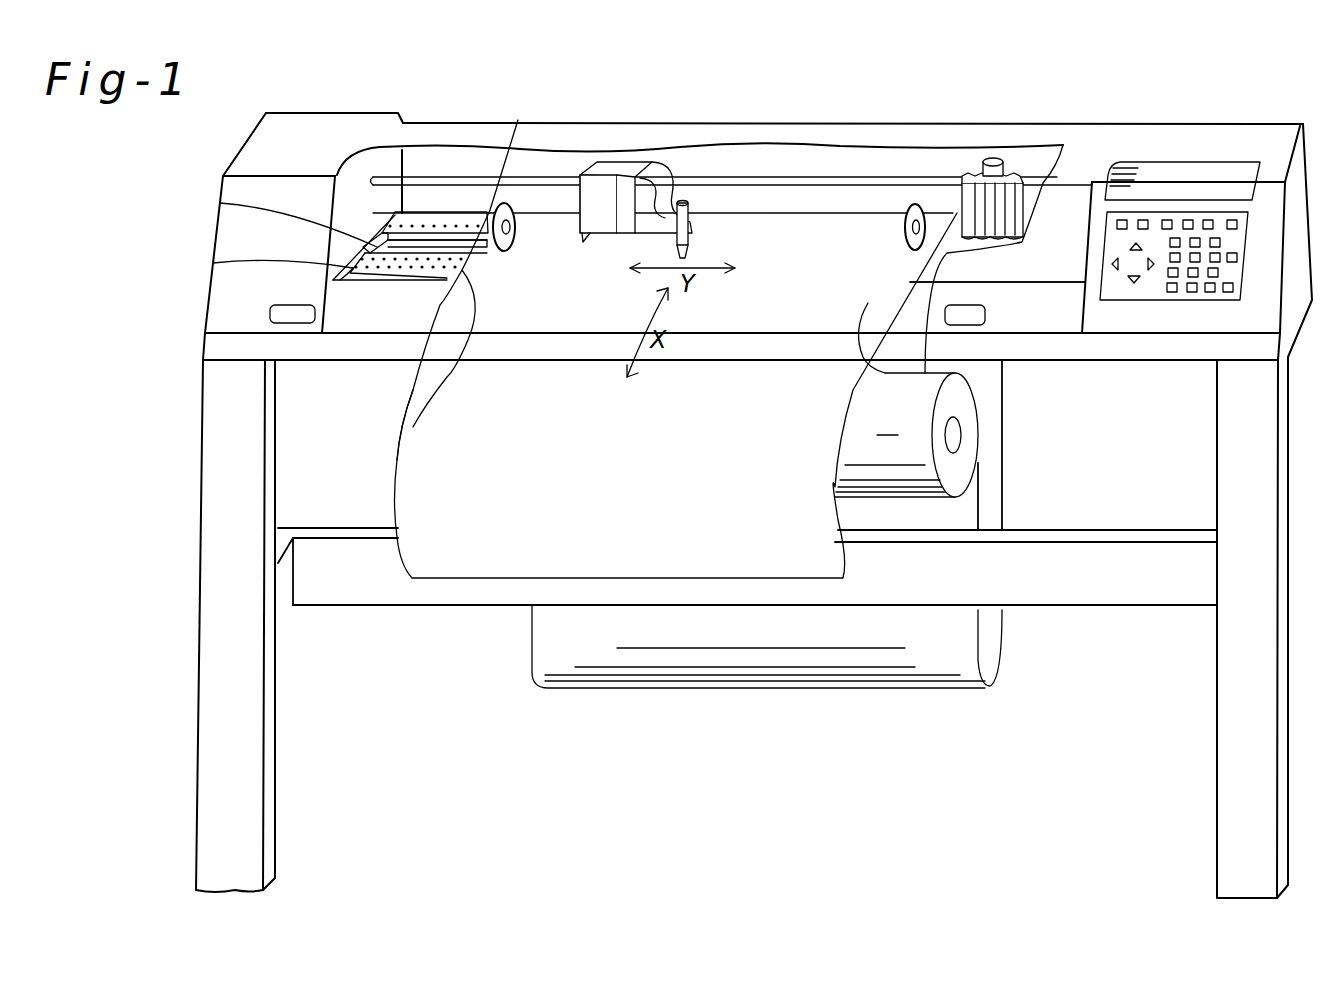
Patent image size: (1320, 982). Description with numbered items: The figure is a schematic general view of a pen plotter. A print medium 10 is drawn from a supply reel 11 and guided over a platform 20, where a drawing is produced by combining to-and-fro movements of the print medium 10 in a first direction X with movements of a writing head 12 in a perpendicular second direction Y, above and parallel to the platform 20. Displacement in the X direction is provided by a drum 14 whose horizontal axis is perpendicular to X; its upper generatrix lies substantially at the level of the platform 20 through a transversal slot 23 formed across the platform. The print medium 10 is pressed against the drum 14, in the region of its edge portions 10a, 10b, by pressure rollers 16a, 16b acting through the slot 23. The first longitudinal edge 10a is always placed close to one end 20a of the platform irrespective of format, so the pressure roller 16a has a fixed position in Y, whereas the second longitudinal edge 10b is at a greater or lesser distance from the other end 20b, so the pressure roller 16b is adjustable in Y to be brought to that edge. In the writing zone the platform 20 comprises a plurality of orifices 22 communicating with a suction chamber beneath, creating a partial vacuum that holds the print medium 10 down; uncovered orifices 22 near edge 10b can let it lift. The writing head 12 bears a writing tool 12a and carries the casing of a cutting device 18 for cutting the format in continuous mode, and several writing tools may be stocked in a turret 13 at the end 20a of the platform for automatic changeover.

The print medium 10 is at (523, 488).
The first longitudinal edge of the print medium 10a is at (870, 340).
The second longitudinal edge of the print medium 10b is at (417, 385).
The supply reel 11 is at (967, 466).
The writing head 12 is at (667, 185).
The writing tool 12a is at (692, 213).
The turret 13 is at (1010, 177).
The drum 14 is at (447, 250).
The pressure roller 16a is at (918, 208).
The pressure roller 16b is at (515, 200).
The cutting device 18 is at (600, 197).
The platform 20 is at (395, 273).
The end of the platform 20a is at (910, 317).
The other end of the platform 20b is at (213, 262).
The orifices 22 is at (422, 258).
The transversal slot 23 is at (218, 203).